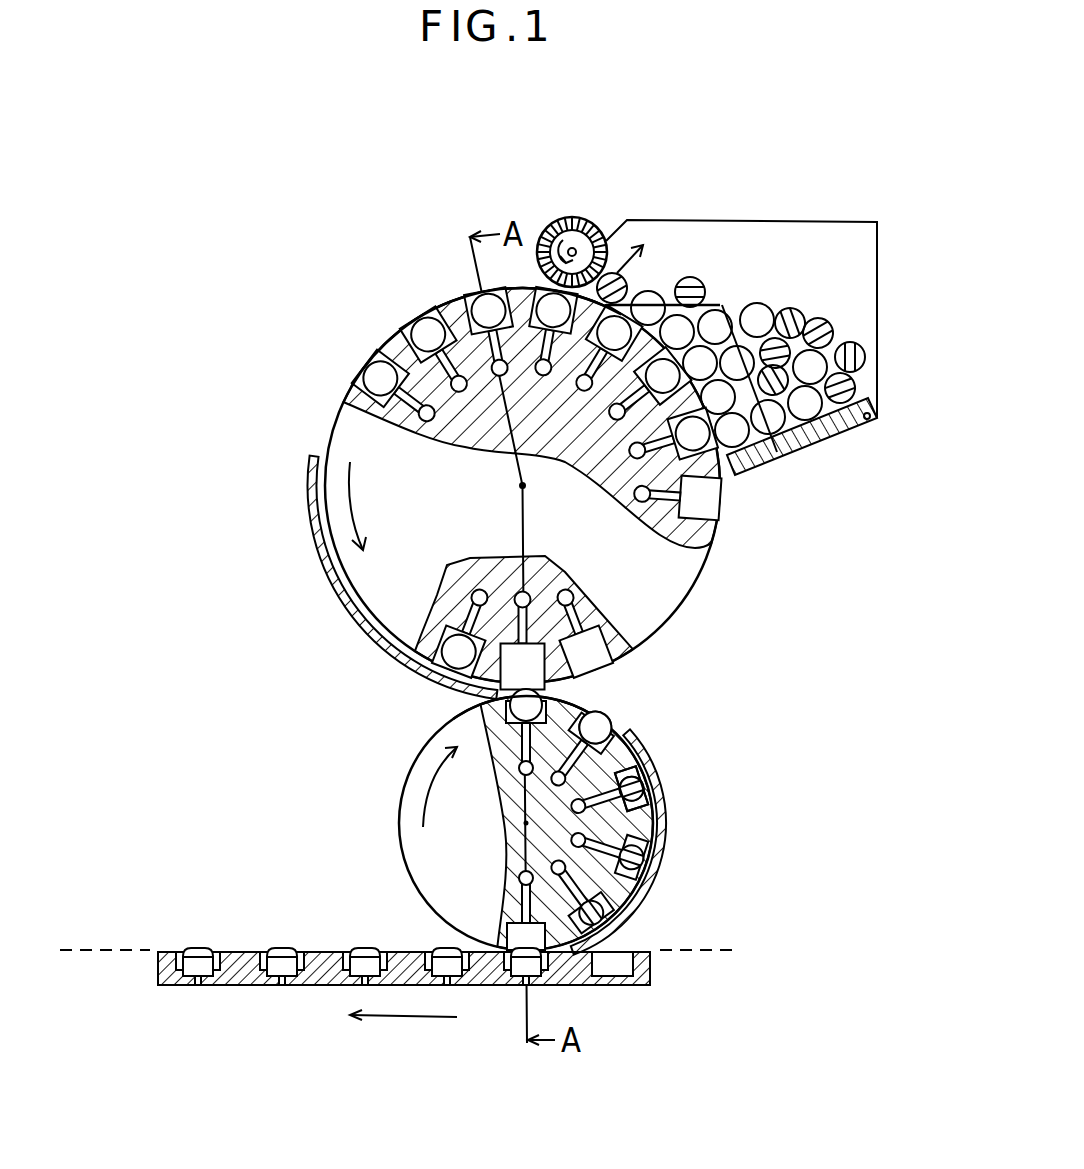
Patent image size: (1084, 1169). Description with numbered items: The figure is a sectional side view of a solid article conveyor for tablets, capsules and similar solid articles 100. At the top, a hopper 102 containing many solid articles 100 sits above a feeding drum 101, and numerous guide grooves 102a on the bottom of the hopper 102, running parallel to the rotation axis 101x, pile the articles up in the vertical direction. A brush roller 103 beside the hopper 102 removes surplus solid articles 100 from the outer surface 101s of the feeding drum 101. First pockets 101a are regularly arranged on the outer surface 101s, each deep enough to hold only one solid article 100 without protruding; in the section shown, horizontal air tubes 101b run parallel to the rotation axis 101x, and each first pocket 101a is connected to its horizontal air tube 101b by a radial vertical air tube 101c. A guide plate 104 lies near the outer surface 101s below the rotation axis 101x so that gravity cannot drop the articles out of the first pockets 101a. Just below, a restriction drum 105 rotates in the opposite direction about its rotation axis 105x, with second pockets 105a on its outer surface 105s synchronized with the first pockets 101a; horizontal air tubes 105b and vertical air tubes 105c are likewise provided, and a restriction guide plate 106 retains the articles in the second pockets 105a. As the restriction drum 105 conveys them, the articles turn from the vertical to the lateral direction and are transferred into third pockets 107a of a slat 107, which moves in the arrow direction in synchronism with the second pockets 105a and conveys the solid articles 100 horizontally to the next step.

The solid article 100 is at (717, 322).
The feeding drum 101 is at (660, 600).
The first pocket 101a is at (700, 521).
The horizontal air tube 101b is at (690, 497).
The vertical air tube 101c is at (728, 482).
The outer surface of the feeding drum 101s is at (453, 295).
The rotation axis of the feeding drum 101x is at (522, 486).
The hopper 102 is at (866, 289).
The guide groove 102a is at (670, 307).
The brush roller 103 is at (577, 242).
The guide plate 104 is at (350, 612).
The restriction drum 105 is at (417, 778).
The second pocket 105a is at (625, 730).
The horizontal air tube 105b is at (645, 755).
The vertical air tube 105c is at (613, 797).
The outer surface of the restriction drum 105s is at (573, 705).
The rotation axis of the restriction drum 105x is at (526, 824).
The restriction guide plate 106 is at (672, 852).
The slat 107 is at (593, 986).
The third pocket 107a is at (653, 986).